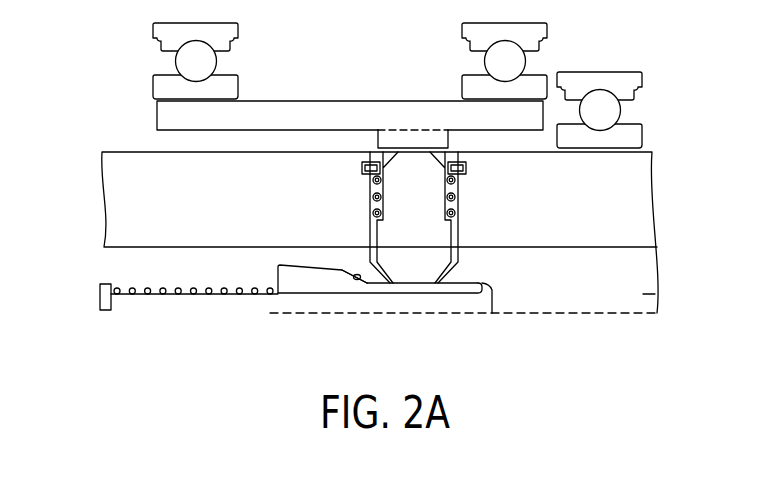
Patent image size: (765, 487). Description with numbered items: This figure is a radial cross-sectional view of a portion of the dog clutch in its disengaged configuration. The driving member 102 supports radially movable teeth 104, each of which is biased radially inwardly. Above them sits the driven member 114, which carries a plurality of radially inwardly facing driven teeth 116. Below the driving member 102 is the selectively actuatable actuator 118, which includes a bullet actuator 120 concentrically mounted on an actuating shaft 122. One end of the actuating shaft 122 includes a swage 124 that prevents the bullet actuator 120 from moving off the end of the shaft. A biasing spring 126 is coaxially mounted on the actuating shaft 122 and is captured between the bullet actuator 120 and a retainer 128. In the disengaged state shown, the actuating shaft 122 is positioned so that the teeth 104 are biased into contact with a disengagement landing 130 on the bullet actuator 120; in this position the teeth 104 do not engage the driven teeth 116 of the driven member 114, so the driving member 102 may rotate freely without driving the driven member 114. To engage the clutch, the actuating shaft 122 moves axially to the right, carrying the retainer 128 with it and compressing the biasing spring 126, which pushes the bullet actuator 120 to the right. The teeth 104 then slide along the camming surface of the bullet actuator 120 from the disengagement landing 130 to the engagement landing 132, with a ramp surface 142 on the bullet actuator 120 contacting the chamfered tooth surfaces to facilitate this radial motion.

The driving member 102 is at (113, 173).
The teeth 104 is at (438, 233).
The driven member 114 is at (293, 115).
The driven teeth 116 is at (413, 137).
The actuator 118 is at (143, 390).
The bullet actuator 120 is at (312, 293).
The actuating shaft 122 is at (136, 308).
The swage 124 is at (496, 303).
The biasing spring 126 is at (207, 295).
The retainer 128 is at (100, 303).
The disengagement landing 130 is at (460, 283).
The engagement landing 132 is at (322, 267).
The ramp surface 142 is at (366, 283).